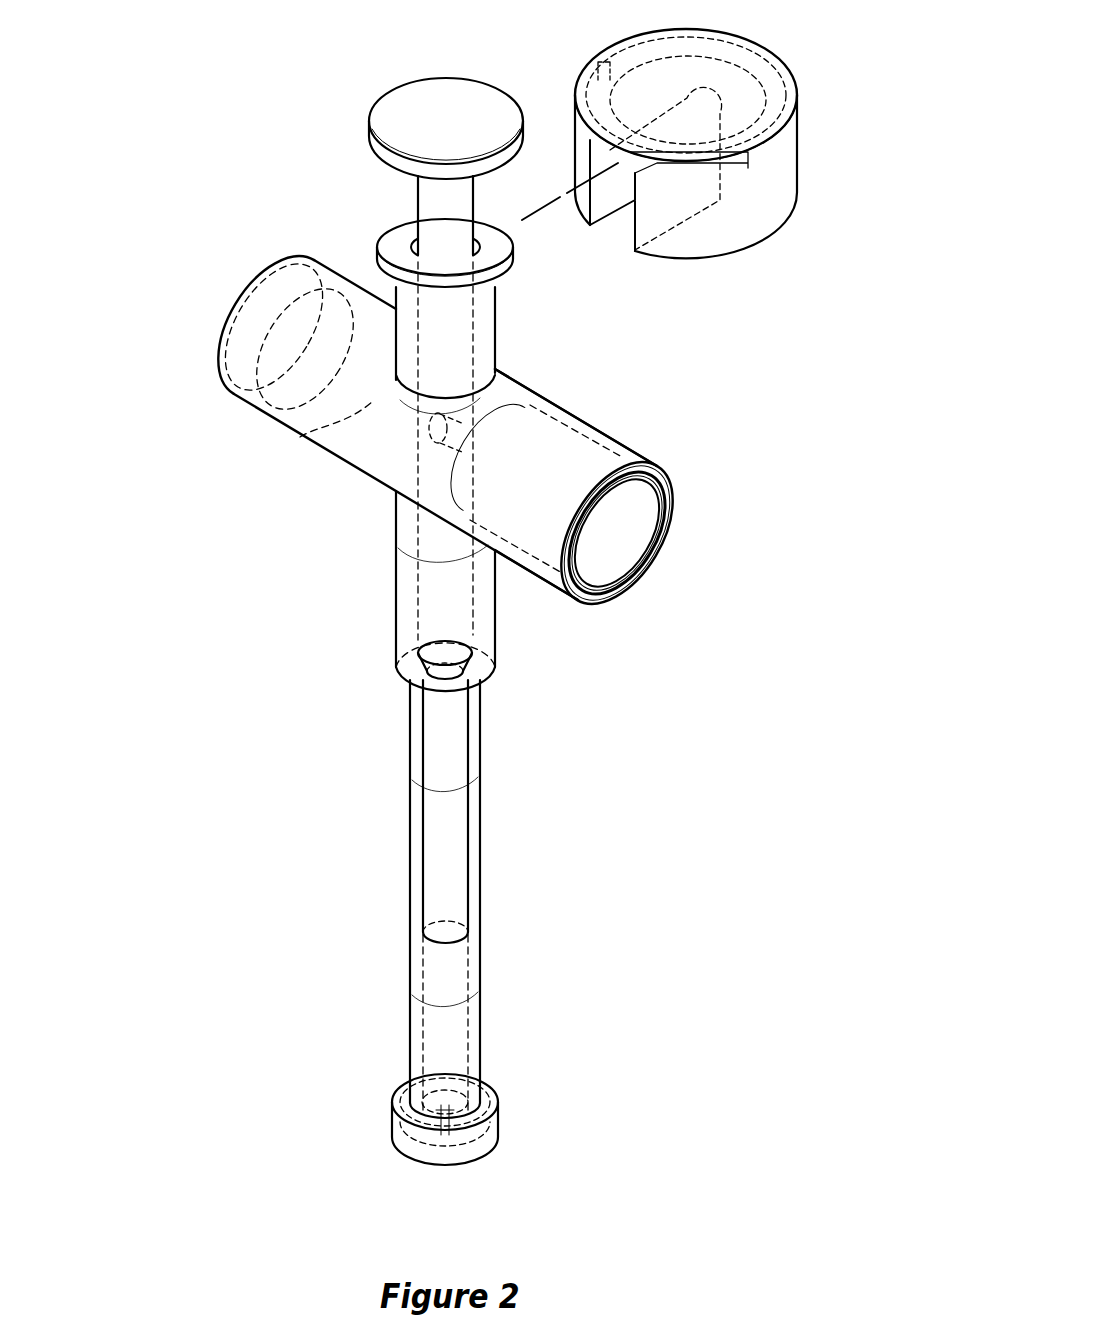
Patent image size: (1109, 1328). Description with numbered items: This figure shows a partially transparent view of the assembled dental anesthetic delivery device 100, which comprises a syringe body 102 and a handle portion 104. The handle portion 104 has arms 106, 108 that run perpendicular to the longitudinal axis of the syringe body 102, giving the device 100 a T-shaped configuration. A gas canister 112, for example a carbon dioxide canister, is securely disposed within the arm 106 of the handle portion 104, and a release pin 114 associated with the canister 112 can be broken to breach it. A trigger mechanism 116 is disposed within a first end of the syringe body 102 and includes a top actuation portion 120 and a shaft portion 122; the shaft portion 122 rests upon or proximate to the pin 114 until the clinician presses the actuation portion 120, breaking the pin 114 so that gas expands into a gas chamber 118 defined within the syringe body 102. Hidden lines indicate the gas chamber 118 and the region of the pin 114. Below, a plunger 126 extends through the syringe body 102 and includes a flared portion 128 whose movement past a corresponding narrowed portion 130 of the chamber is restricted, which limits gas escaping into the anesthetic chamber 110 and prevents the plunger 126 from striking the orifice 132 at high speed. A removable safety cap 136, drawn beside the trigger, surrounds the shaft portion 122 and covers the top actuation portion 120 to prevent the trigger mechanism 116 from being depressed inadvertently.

The dental anesthetic delivery device 100 is at (172, 208).
The syringe body 102 is at (395, 606).
The handle portion 104 is at (505, 376).
The arm 106 is at (637, 437).
The arm 108 is at (233, 390).
The anesthetic chamber 110 is at (463, 976).
The gas canister 112 is at (645, 521).
The release pin 114 is at (443, 440).
The trigger mechanism 116 is at (344, 128).
The gas chamber 118 is at (300, 437).
The top actuation portion 120 is at (461, 89).
The shaft portion 122 is at (423, 193).
The plunger 126 is at (418, 846).
The flared portion 128 is at (418, 673).
The narrowed portion 130 is at (480, 676).
The orifice 132 is at (400, 1130).
The removable safety cap 136 is at (770, 53).